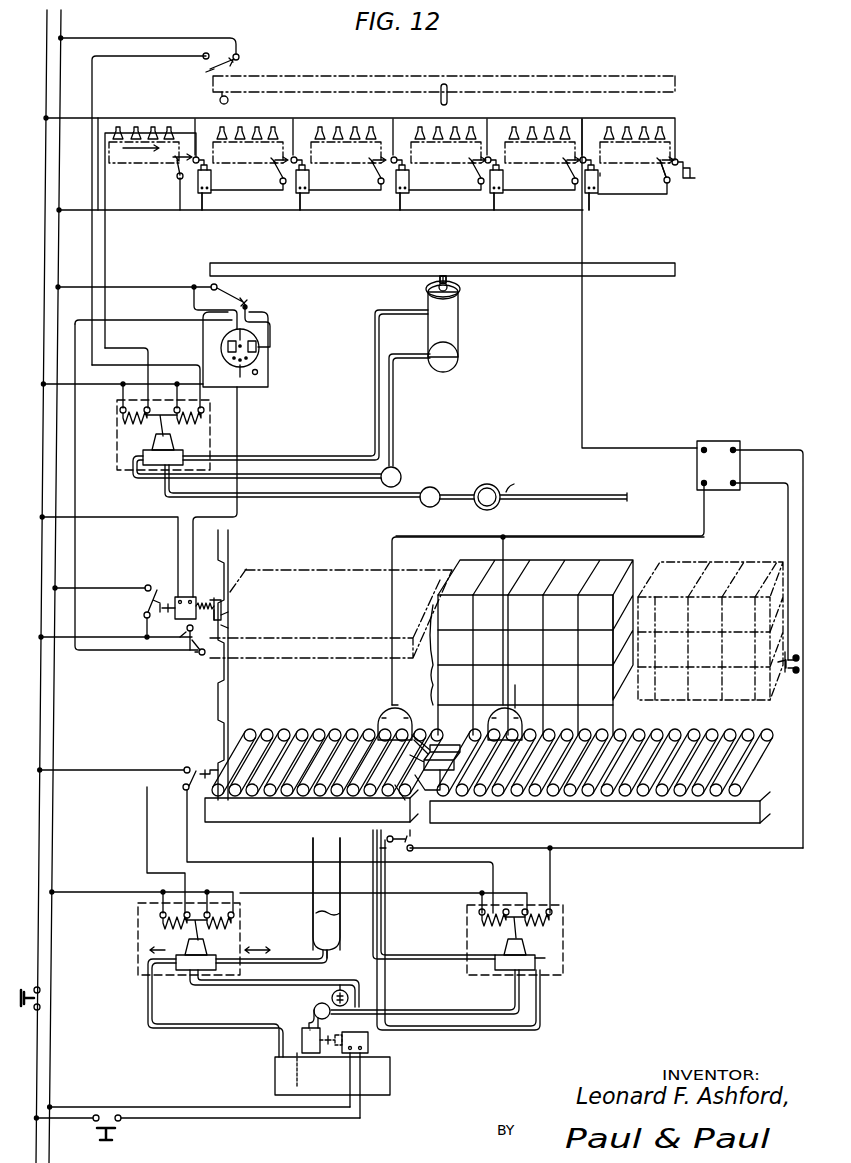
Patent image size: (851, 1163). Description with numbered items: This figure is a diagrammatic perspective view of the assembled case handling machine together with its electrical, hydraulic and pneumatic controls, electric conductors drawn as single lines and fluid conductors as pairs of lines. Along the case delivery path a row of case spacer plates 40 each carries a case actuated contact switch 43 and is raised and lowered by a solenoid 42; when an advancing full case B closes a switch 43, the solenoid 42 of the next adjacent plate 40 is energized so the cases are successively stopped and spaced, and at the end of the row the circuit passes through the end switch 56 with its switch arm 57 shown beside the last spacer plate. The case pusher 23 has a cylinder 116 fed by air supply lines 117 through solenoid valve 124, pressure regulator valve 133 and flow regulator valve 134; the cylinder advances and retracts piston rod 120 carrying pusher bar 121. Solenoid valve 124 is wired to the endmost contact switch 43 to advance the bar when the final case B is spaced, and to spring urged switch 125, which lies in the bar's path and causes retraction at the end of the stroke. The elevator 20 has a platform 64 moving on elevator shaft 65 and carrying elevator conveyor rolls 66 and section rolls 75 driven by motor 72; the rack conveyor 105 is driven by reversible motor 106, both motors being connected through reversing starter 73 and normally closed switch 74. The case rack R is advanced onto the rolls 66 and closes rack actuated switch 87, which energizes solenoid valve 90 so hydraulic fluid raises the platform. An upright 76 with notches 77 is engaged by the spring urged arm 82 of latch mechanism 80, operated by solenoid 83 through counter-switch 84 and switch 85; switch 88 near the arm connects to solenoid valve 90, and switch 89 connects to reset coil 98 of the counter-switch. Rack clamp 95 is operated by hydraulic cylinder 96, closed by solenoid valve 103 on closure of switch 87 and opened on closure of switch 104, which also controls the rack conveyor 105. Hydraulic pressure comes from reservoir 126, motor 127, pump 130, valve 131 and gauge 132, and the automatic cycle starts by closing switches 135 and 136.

The pusher bar 121 is at (402, 76).
The piston rod 120 is at (446, 263).
The spring urged switch 125 is at (244, 50).
The full case B is at (389, 158).
The case spacer plate 40 is at (406, 164).
The case actuated contact switch 43 is at (150, 175).
The solenoid 42 is at (409, 201).
The end switch 56 is at (686, 164).
The switch arm 57 is at (678, 180).
The spring urged switch 85 is at (270, 302).
The counter-switch 84 is at (278, 335).
The reset coil 98 is at (222, 348).
The solenoid valve 124 is at (150, 456).
The air supply line 117 is at (398, 353).
The cylinder 116 is at (453, 325).
The flow regulator valve 134 is at (398, 473).
The pressure regulator valve 133 is at (431, 487).
The case pusher 23 is at (535, 290).
The reversing starter 73 is at (718, 440).
The normally closed switch 74 is at (780, 660).
The elevator platform 64 is at (330, 568).
The upright 76 is at (230, 668).
The solenoid 83 is at (192, 597).
The notch engaging arm 82 is at (222, 608).
The notches 77 is at (228, 628).
The switch 88 is at (156, 580).
The solenoid operated latch mechanism 80 is at (182, 629).
The switch 89 is at (198, 656).
The rack actuated switch 87 is at (202, 760).
The elevator conveyor rolls 66 is at (320, 737).
The rack conveyor 105 is at (605, 795).
The case rack R is at (428, 658).
The motor 72 is at (384, 718).
The section rolls 75 is at (425, 727).
The rack clamp 95 is at (455, 738).
The reversible motor 106 is at (515, 726).
The hydraulic cylinder 96 is at (414, 797).
The switch 104 is at (425, 835).
The elevator 20 is at (300, 835).
The elevator shaft 65 is at (314, 922).
The solenoid valve 90 is at (190, 968).
The solenoid valve 103 is at (538, 960).
The gauge 132 is at (349, 996).
The valve 131 is at (314, 1008).
The pump 130 is at (283, 1047).
The motor 127 is at (369, 1045).
The reservoir 126 is at (390, 1084).
The switch 135 is at (44, 998).
The switch 136 is at (113, 1136).